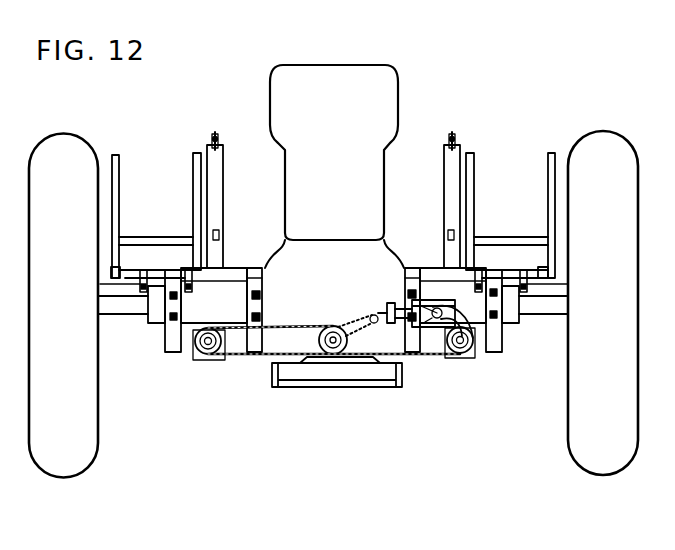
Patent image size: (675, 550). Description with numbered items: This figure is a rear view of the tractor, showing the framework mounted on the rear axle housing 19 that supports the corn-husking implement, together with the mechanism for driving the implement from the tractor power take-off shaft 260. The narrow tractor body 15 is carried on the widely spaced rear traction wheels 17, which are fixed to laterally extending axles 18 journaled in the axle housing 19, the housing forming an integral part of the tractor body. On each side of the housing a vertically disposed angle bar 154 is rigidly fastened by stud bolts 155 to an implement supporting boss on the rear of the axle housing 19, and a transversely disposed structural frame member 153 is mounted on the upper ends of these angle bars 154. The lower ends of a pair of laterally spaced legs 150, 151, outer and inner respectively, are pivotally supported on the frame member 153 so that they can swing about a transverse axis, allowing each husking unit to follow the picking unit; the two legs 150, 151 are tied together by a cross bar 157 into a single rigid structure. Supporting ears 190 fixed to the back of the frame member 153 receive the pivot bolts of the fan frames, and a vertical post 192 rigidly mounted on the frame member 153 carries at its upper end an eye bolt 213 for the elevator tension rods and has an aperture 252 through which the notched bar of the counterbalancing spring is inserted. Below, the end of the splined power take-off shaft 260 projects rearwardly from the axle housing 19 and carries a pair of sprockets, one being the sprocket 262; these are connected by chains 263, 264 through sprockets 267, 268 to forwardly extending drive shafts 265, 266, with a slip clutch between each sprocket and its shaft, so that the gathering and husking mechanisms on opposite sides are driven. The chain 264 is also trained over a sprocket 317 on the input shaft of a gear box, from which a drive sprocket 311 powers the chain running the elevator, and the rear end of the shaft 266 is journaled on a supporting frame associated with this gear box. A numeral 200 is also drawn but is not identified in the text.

The tractor body 15 is at (380, 74).
The rear traction wheels 17 is at (62, 452).
The axles 18 is at (124, 306).
The axle housing 19 is at (231, 312).
The outer leg 150 is at (112, 202).
The inner leg 151 is at (193, 170).
The structural frame member 153 is at (111, 273).
The angle bars 154 is at (172, 342).
The stud bolts 155 is at (170, 300).
The cross bar 157 is at (135, 240).
The supporting ears 190 is at (578, 285).
The vertical post 192 is at (216, 182).
The support bracket 200 is at (318, 387).
The eye bolts 213 is at (215, 133).
The aperture 252 is at (220, 232).
The power take-off shaft 260 is at (337, 372).
The sprocket 262 is at (328, 326).
The chain 263 is at (302, 387).
The chain 264 is at (386, 312).
The drive shaft 265 is at (197, 358).
The drive shaft 266 is at (458, 355).
The sprocket 267 is at (208, 354).
The sprocket 268 is at (438, 328).
The drive sprocket 311 is at (378, 322).
The sprocket 317 is at (442, 290).